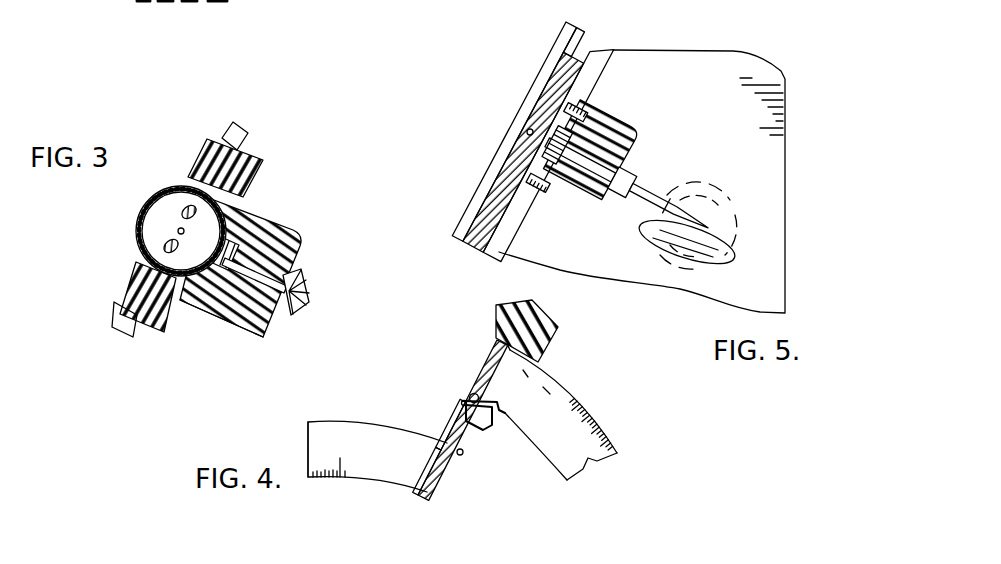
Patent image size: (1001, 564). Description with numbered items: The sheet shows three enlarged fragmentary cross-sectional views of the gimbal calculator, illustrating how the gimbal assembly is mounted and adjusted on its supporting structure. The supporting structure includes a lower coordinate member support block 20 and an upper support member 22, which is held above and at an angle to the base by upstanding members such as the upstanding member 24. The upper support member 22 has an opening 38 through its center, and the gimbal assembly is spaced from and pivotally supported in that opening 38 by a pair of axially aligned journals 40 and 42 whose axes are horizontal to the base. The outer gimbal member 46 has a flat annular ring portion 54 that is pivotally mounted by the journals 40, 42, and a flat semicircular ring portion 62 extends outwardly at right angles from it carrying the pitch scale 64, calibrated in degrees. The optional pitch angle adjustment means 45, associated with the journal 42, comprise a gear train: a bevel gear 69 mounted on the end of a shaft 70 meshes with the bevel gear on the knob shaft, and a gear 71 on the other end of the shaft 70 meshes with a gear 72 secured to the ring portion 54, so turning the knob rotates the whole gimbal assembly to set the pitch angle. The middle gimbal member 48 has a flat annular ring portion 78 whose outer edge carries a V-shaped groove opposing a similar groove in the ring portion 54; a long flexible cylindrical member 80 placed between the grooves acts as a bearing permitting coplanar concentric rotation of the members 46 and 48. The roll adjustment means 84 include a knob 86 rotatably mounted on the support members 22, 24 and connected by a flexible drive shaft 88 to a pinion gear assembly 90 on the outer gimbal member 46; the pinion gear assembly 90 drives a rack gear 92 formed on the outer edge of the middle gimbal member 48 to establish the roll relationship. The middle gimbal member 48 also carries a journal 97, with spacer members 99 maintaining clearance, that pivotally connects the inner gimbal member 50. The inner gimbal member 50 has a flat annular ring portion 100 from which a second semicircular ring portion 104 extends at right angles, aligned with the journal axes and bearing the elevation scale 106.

In FIG. 5, the lower coordinate member support block 20 is at (415, 1).
In FIG. 3, the upper support member 22 is at (261, 157).
In FIG. 5, the upper support member 22 is at (470, 258).
In FIG. 4, the upper support member 22 is at (548, 318).
In FIG. 5, the upstanding member 24 is at (785, 222).
In FIG. 5, the opening 38 is at (600, 52).
In FIG. 4, the opening 38 is at (534, 366).
In FIG. 5, the journal 40 is at (528, 130).
In FIG. 3, the journal 42 is at (178, 233).
In FIG. 3, the pitch angle adjustment means 45 is at (318, 232).
In FIG. 4, the outer gimbal member 46 is at (592, 406).
In FIG. 4, the middle gimbal member 48 is at (462, 438).
In FIG. 4, the inner gimbal member 50 is at (305, 441).
In FIG. 3, the flat annular ring portion 54 is at (238, 132).
In FIG. 5, the flat annular ring portion 54 is at (582, 47).
In FIG. 4, the flat annular ring portion 54 is at (487, 360).
In FIG. 4, the flat semicircular ring portion 62 is at (588, 460).
In FIG. 4, the pitch scale 64 is at (596, 431).
In FIG. 3, the bevel gear 69 is at (311, 283).
In FIG. 3, the shaft 70 is at (227, 323).
In FIG. 3, the gear 71 is at (242, 230).
In FIG. 3, the gear 72 is at (136, 219).
In FIG. 4, the flat annular ring portion 78 is at (461, 402).
In FIG. 4, the long flexible cylindrical member 80 is at (468, 396).
In FIG. 5, the roll adjustment means 84 is at (638, 118).
In FIG. 5, the knob 86 is at (720, 193).
In FIG. 5, the flexible drive shaft 88 is at (637, 205).
In FIG. 5, the pinion gear assembly 90 is at (541, 140).
In FIG. 4, the rack gear 92 is at (484, 423).
In FIG. 4, the journal 97 is at (444, 477).
In FIG. 4, the spacer member 99 is at (463, 454).
In FIG. 4, the flat annular ring portion 100 is at (428, 465).
In FIG. 4, the second semicircular ring portion 104 is at (323, 422).
In FIG. 4, the elevation scale 106 is at (346, 478).